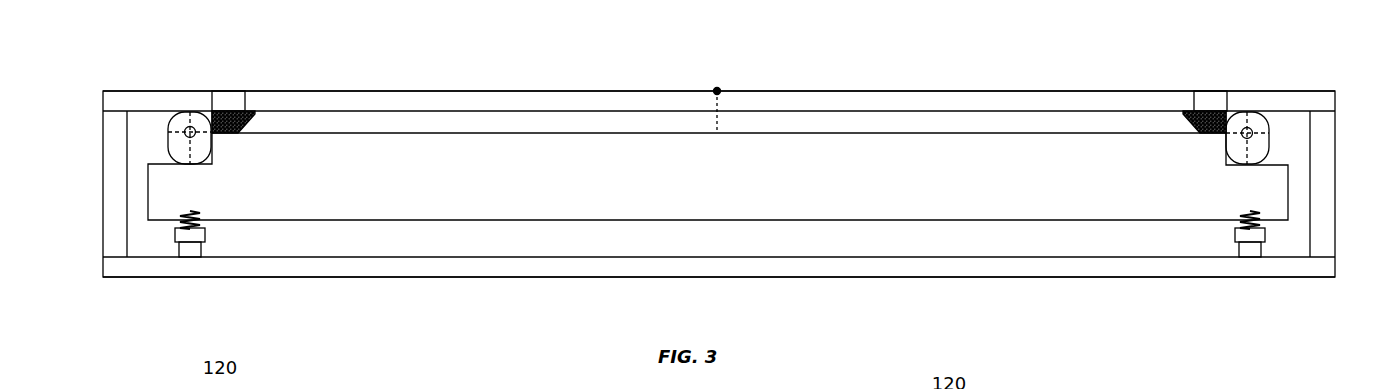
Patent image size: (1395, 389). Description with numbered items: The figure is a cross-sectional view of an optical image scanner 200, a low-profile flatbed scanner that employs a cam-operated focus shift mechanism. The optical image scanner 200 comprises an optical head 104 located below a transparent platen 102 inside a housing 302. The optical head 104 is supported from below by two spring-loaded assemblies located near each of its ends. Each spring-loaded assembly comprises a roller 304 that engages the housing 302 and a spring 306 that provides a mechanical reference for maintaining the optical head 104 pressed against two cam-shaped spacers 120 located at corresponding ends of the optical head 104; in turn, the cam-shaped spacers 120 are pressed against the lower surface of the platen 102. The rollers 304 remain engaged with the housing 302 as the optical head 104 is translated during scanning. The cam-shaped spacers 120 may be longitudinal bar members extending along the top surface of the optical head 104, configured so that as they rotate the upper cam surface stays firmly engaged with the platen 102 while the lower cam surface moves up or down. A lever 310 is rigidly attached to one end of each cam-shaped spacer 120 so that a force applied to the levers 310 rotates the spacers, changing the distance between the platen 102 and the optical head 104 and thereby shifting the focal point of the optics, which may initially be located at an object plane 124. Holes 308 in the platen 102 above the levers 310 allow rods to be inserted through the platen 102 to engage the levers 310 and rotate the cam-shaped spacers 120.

The optical image scanner 200 is at (1117, 46).
The transparent platen 102 is at (898, 91).
The housing 302 is at (439, 277).
The spring 306 is at (145, 246).
The object plane 124 is at (717, 91).
The optical head 104 is at (554, 220).
The cam-shaped spacer 120 is at (147, 105).
The hole 308 is at (224, 91).
The lever 310 is at (255, 122).
The roller 304 is at (205, 248).